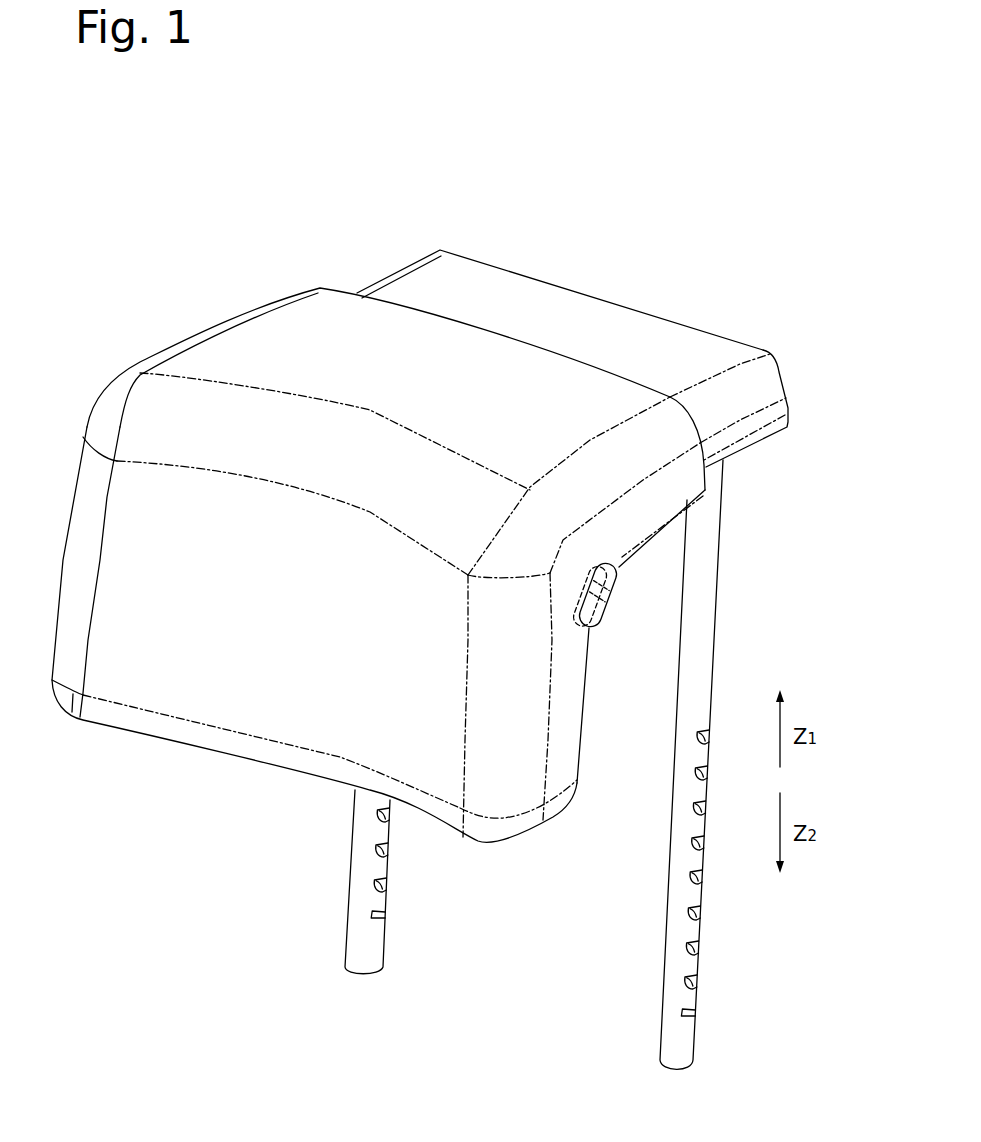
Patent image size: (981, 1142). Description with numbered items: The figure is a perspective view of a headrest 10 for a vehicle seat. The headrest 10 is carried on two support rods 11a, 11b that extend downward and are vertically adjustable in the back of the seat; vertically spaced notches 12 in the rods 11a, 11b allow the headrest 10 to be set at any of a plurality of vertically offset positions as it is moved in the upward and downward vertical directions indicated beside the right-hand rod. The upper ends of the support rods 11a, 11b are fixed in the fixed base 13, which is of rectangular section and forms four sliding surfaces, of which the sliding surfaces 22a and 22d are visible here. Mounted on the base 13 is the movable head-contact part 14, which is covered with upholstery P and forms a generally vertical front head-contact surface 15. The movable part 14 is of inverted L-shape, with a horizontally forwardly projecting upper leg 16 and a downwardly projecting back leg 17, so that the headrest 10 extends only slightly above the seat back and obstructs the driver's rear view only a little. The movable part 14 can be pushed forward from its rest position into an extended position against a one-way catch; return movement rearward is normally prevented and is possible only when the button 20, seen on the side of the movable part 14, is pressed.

The headrest 10 is at (480, 139).
The support rod 11a is at (367, 958).
The support rod 11b is at (677, 1052).
The notches 12 is at (390, 857).
The fixed base 13 is at (648, 343).
The movable head-contact part 14 is at (239, 356).
The front head-contact surface 15 is at (236, 657).
The upper leg 16 is at (562, 766).
The back leg 17 is at (664, 505).
The button 20 is at (603, 593).
The sliding surface 22a is at (522, 303).
The sliding surface 22d is at (750, 406).
The upholstery P is at (297, 353).